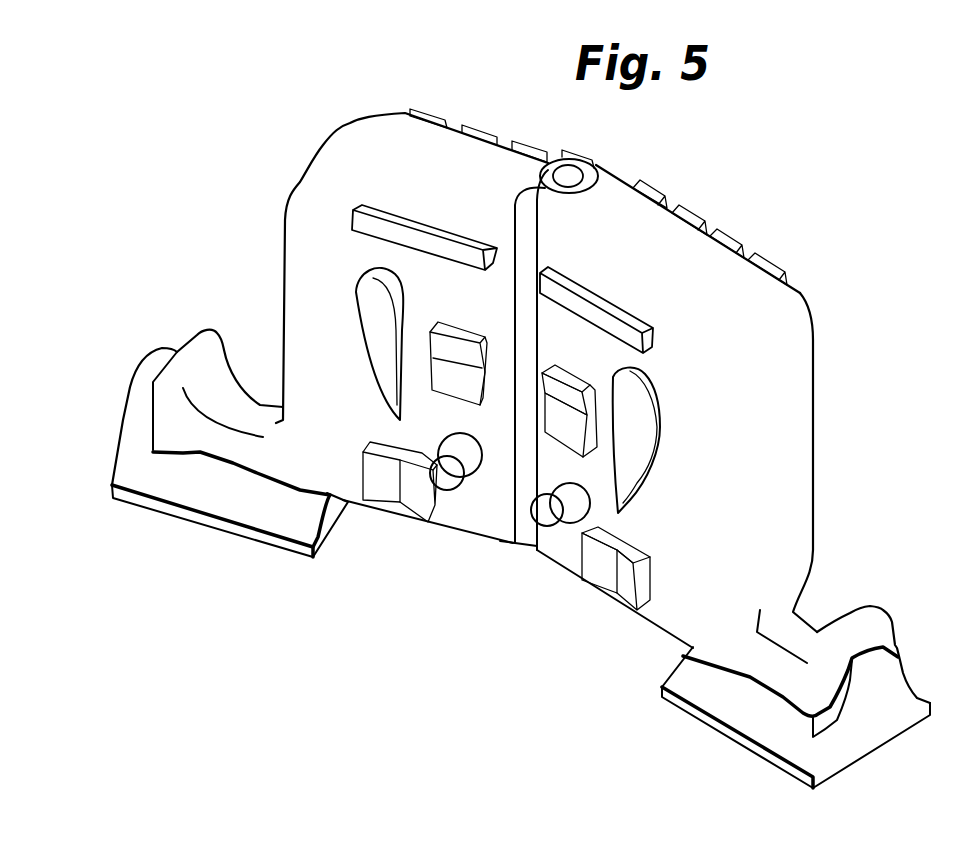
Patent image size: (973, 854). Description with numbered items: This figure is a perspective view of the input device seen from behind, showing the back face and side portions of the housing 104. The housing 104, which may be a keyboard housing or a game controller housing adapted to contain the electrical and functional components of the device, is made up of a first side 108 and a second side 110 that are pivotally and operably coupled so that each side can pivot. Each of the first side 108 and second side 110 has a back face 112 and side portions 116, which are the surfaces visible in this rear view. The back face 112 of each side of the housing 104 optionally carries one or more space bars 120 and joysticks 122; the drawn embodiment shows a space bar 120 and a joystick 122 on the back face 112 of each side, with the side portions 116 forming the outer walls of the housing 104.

The housing 104 is at (238, 150).
The first side 108 is at (744, 194).
The second side 110 is at (515, 103).
The back face 112 is at (322, 382).
The side portions 116 is at (800, 458).
The space bar 120 is at (430, 243).
The joystick 122 is at (548, 522).